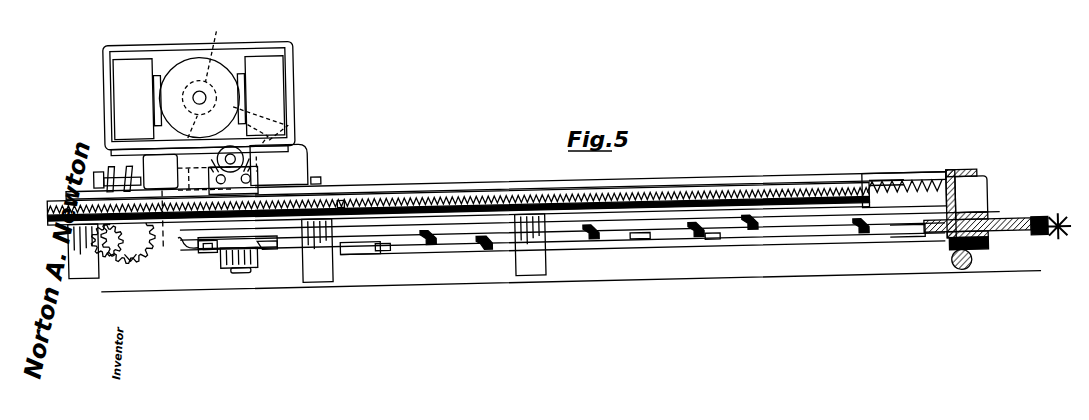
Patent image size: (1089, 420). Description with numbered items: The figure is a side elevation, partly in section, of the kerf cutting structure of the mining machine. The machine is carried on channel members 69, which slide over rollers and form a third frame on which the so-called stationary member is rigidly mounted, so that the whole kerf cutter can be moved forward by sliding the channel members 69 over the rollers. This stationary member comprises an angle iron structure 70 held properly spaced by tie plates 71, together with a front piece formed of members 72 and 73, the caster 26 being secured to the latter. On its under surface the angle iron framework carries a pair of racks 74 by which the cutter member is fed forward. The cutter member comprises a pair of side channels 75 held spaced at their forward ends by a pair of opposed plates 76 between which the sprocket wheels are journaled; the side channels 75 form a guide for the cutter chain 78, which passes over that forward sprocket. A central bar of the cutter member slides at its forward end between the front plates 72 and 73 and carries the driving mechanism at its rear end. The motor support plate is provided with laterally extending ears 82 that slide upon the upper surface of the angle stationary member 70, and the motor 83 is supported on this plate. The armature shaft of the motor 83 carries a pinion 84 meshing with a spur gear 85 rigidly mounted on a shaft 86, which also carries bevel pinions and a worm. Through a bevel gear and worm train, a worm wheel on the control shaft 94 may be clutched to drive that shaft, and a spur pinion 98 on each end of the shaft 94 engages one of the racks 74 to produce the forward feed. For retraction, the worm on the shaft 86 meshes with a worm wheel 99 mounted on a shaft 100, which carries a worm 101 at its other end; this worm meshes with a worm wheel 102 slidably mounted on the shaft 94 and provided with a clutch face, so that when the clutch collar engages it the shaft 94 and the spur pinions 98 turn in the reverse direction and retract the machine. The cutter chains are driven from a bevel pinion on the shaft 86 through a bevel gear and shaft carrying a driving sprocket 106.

The caster 26 is at (960, 273).
The channel members 69 is at (643, 198).
The angle iron structure 70 is at (707, 182).
The tie plates 71 is at (76, 259).
The front plate 72 is at (950, 172).
The front plate 73 is at (983, 243).
The racks 74 is at (342, 203).
The side channels 75 is at (440, 245).
The opposed plates 76 is at (1018, 213).
The cutter chain 78 is at (668, 234).
The laterally extending ears 82 is at (293, 177).
The motor 83 is at (290, 68).
The pinion 84 is at (223, 80).
The spur gear 85 is at (262, 107).
The shaft 86 is at (232, 160).
The shaft 94 is at (110, 245).
The spur pinion 98 is at (124, 255).
The worm wheel 99 is at (297, 166).
The shaft 100 is at (171, 229).
The worm 101 is at (120, 167).
The worm wheel 102 is at (135, 250).
The driving sprocket 106 is at (237, 260).